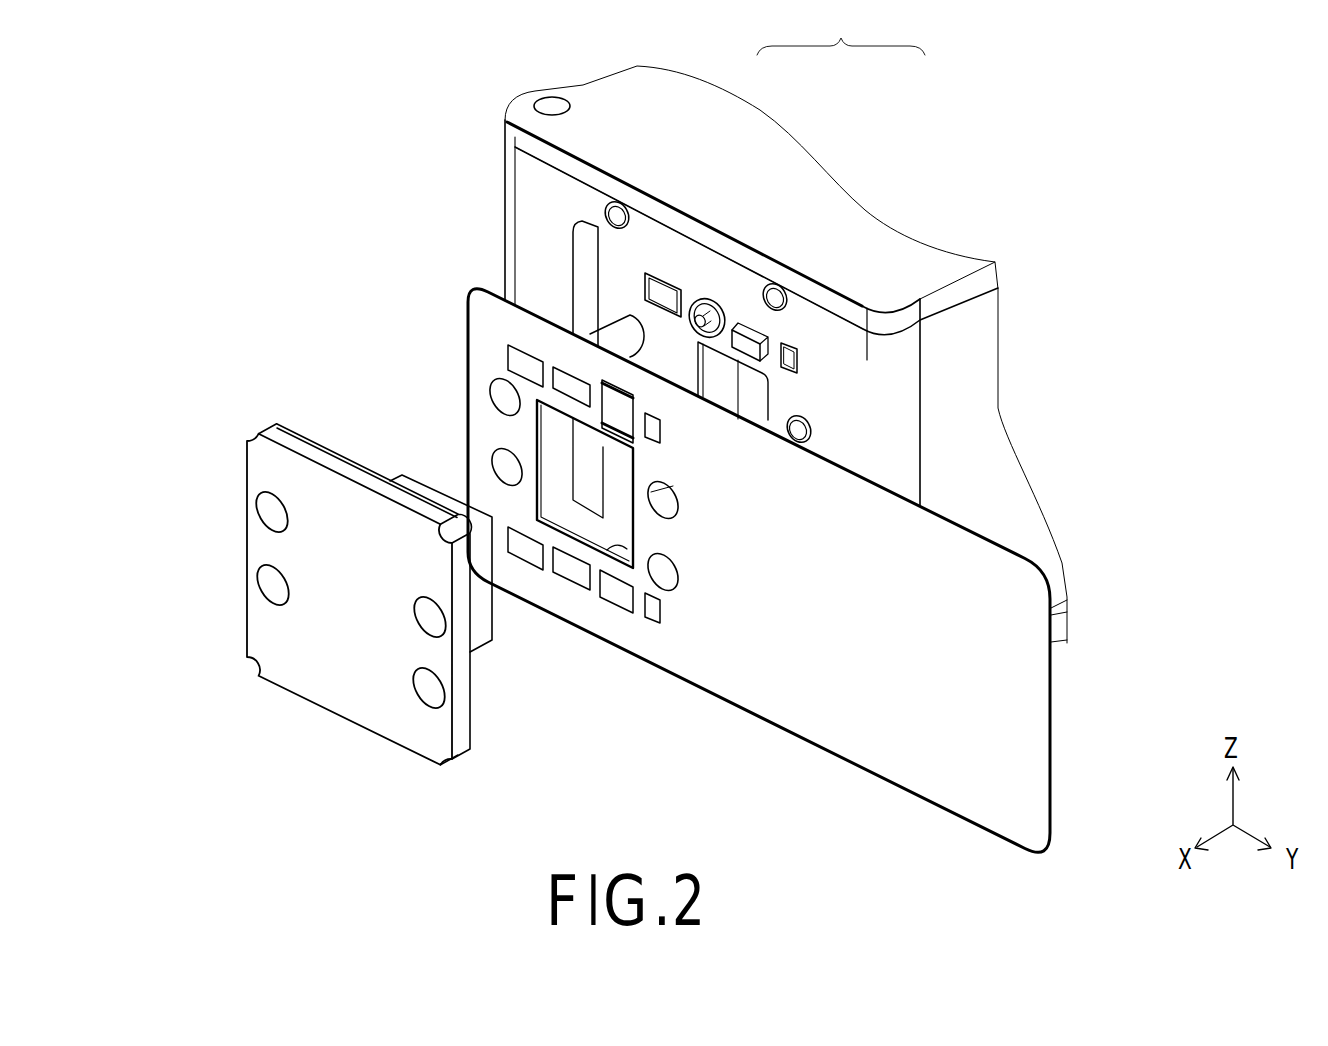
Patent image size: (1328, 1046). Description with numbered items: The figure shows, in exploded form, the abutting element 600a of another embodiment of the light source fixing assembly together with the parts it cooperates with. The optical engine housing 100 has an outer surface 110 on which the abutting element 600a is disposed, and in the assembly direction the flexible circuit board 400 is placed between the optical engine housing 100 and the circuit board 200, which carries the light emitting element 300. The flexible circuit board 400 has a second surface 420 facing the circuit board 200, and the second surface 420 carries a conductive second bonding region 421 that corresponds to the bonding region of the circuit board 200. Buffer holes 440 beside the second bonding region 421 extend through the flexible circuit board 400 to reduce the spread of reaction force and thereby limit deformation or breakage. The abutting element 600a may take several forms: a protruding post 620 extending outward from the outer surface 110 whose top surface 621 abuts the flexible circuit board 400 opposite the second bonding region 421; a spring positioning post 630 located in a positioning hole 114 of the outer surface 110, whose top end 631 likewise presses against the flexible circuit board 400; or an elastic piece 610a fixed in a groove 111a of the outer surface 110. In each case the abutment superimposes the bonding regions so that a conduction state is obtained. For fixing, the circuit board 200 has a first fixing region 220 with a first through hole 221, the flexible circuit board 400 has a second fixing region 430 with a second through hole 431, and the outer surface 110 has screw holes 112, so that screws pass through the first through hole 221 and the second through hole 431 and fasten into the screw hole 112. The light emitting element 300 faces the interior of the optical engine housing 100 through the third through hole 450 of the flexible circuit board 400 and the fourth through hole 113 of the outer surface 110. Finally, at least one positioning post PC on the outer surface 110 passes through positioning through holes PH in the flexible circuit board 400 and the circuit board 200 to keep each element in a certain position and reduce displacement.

The optical engine housing 100 is at (608, 96).
The outer surface 110 is at (608, 251).
The positioning post PC is at (614, 331).
The groove 111a is at (867, 357).
The screw hole 112 is at (812, 446).
The fourth through hole 113 is at (758, 391).
The positioning hole 114 is at (812, 431).
The abutting element 600a is at (801, 411).
The protruding post 620 is at (702, 303).
The top surface 621 is at (652, 272).
The spring positioning post 630 is at (750, 333).
The top end 631 is at (700, 330).
The elastic piece 610a is at (779, 351).
The flexible circuit board 400 is at (609, 546).
The second surface 420 is at (757, 655).
The second bonding region 421 is at (512, 363).
The positioning through hole PH is at (497, 397).
The second fixing region 430 is at (654, 608).
The second through hole 431 is at (663, 514).
The buffer hole 440 is at (612, 393).
The third through hole 450 is at (557, 510).
The circuit board 200 is at (284, 434).
The first fixing region 220 is at (422, 706).
The first through hole 221 is at (425, 616).
The light emitting element 300 is at (410, 483).